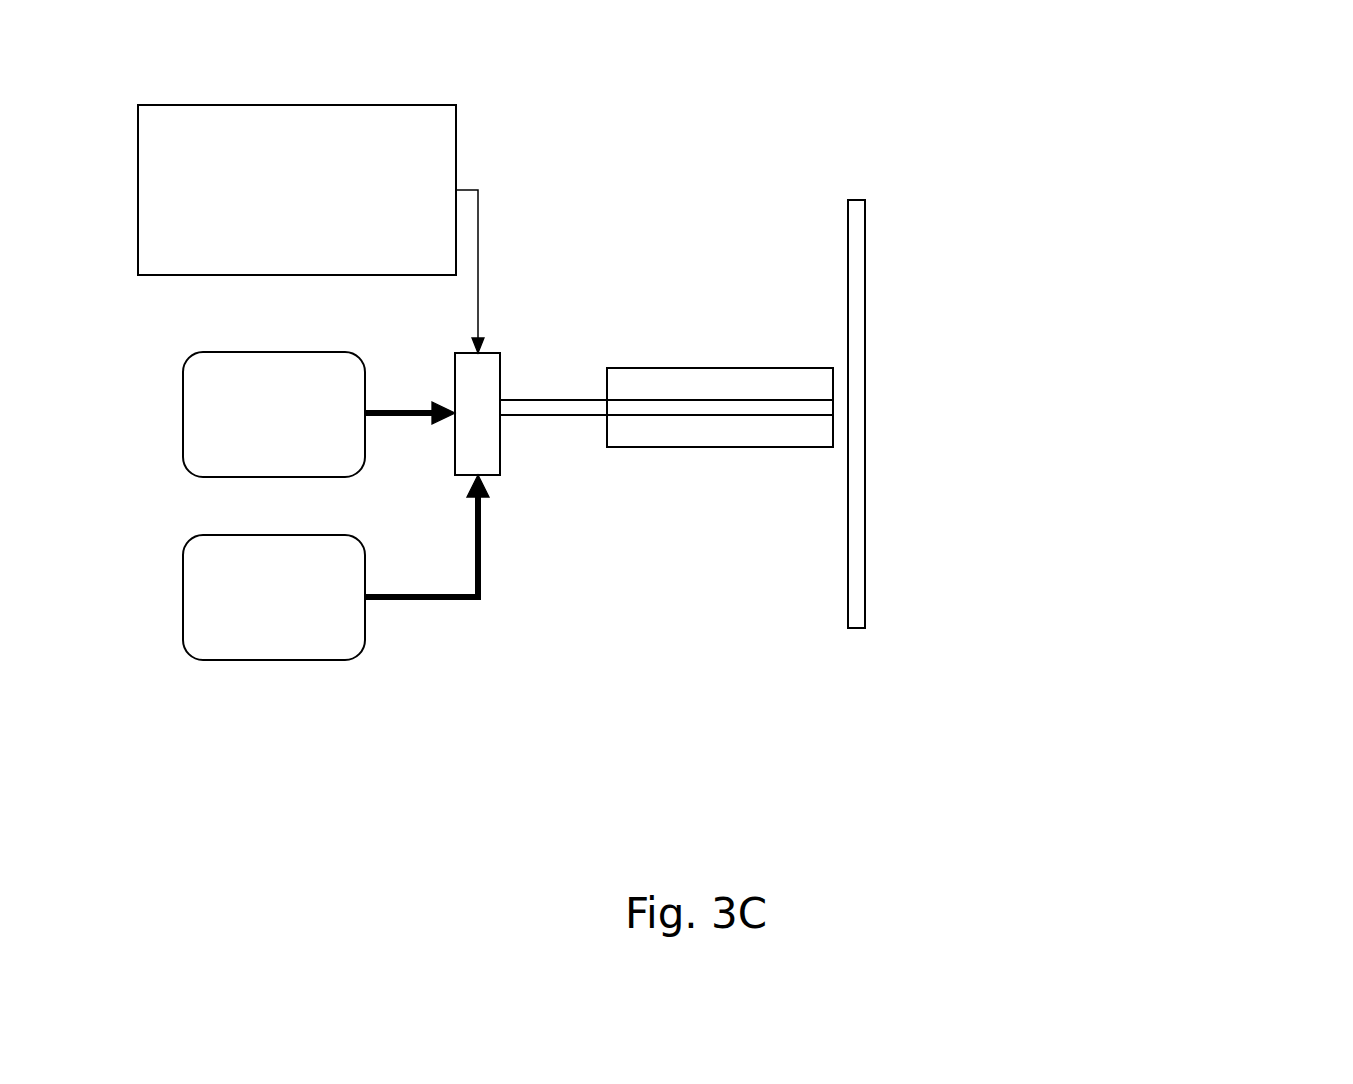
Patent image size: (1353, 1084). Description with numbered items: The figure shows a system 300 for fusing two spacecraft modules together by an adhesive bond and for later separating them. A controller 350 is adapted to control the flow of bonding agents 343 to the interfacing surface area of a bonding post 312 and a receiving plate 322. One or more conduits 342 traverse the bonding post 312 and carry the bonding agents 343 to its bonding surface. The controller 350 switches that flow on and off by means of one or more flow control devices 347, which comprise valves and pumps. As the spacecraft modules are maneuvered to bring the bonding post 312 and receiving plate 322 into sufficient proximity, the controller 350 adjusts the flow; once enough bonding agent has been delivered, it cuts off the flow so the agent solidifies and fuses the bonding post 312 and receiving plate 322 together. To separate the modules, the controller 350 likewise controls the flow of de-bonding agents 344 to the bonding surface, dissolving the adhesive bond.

The system 300 is at (1121, 414).
The bonding post 312 is at (720, 368).
The receiving plate 322 is at (853, 198).
The conduit 342 is at (682, 420).
The bonding agents 343 is at (181, 410).
The de-bonding agents 344 is at (181, 595).
The flow control devices 347 is at (500, 450).
The controller 350 is at (297, 105).